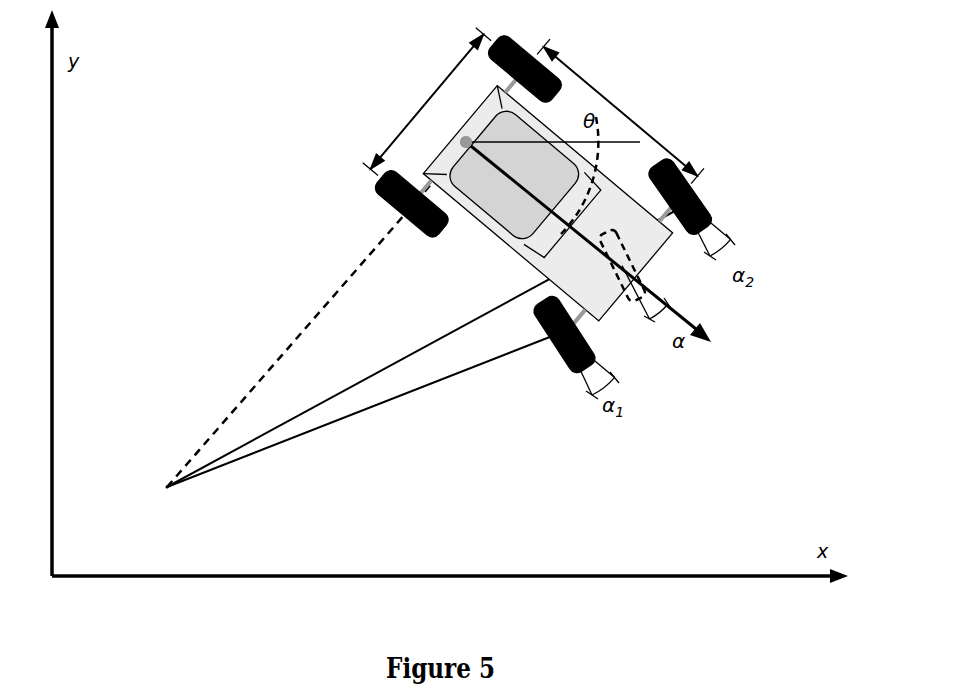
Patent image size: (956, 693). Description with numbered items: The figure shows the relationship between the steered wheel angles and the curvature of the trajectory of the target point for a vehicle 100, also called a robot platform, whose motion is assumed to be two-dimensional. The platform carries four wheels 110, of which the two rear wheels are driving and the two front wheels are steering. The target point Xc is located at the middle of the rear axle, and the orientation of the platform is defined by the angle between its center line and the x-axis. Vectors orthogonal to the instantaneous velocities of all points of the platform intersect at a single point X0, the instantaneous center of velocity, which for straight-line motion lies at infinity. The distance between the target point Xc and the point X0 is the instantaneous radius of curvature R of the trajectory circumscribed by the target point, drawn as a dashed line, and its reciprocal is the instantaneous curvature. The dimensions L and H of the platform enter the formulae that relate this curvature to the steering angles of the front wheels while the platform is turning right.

The vehicle 100 is at (493, 241).
The wheel 110 is at (702, 197).
The instantaneous center of velocity X0 is at (145, 495).
The target point Xc is at (452, 128).
The instantaneous radius of curvature R is at (316, 314).
The platform width dimension H is at (426, 101).
The platform length dimension L is at (621, 111).